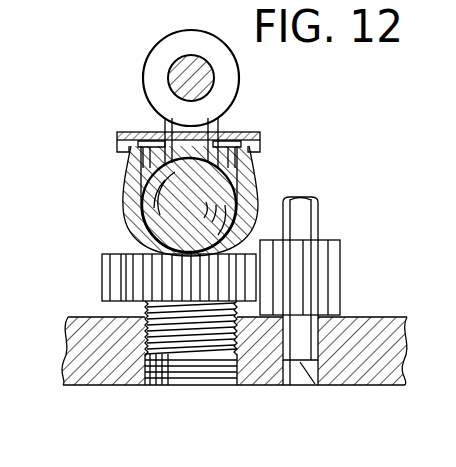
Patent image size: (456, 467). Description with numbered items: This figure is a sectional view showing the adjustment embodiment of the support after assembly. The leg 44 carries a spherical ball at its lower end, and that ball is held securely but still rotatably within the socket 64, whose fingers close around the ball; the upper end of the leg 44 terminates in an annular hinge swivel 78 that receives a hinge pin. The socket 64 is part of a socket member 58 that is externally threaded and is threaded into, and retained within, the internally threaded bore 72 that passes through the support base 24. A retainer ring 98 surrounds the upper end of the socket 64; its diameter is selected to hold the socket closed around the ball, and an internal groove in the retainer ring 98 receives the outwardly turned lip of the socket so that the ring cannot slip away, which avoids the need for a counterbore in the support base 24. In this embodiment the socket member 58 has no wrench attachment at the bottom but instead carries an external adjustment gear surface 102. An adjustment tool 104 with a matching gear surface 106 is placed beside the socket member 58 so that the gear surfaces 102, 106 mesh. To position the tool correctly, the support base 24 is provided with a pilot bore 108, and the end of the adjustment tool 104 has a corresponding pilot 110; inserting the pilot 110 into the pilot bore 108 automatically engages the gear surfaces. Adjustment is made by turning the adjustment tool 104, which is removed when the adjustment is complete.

The support base 24 is at (65, 335).
The leg 44 is at (208, 130).
The socket member 58 is at (196, 355).
The socket 64 is at (123, 190).
The bore 72 is at (183, 384).
The eye ring 78 is at (167, 80).
The retainer ring 98 is at (260, 138).
The external adjustment gear surface 102 is at (102, 272).
The adjustment tool 104 is at (320, 212).
The matching gear surface 106 is at (341, 268).
The pilot bore 108 is at (292, 377).
The pilot 110 is at (310, 372).